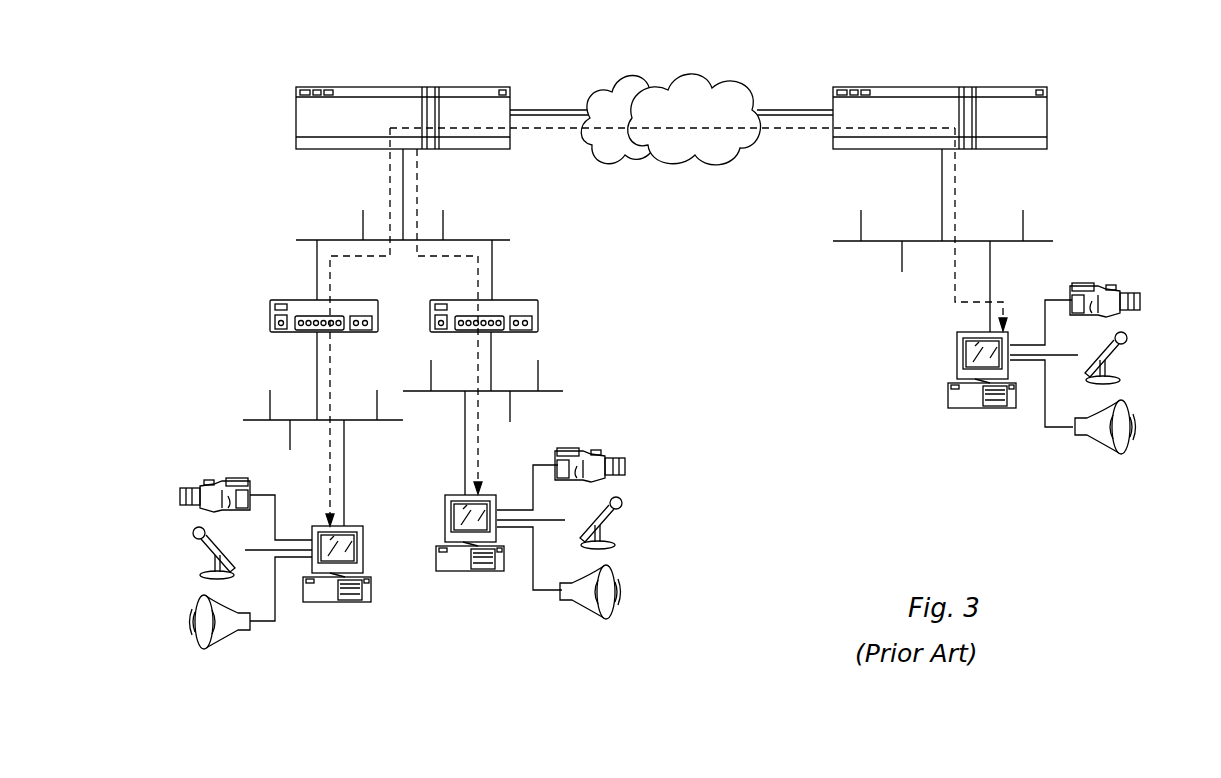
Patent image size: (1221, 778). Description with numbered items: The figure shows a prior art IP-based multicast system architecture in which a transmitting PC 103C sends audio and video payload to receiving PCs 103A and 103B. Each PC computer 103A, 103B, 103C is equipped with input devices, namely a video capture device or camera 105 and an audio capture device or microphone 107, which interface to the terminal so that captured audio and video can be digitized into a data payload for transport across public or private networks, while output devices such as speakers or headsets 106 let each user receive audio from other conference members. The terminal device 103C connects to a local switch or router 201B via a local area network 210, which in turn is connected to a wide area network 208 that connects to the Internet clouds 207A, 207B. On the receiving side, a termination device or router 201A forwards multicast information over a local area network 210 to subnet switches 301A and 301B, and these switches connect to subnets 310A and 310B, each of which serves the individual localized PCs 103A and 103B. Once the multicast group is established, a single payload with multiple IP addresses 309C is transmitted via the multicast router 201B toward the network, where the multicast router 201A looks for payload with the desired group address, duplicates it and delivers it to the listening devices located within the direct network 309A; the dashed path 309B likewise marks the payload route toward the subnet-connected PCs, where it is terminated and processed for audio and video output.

The termination device or router 201A is at (395, 87).
The local switch or router 201B is at (928, 88).
The Internet cloud 207A is at (630, 73).
The Internet cloud 207B is at (704, 71).
The wide area network 208 is at (544, 110).
The local area network 210 is at (310, 240).
The subnet switch 301A is at (304, 300).
The subnet switch 301B is at (506, 300).
The subnet 310A is at (258, 420).
The subnet 310B is at (561, 391).
The direct network 309A is at (328, 478).
The data path 309B is at (548, 130).
The single payload with multiple IP addresses 309C is at (799, 130).
The PC computer 103A is at (363, 549).
The PC computer 103B is at (445, 511).
The PC computer 103C is at (957, 354).
The video capture device 105 is at (180, 492).
The speakers or headsets 106 is at (196, 608).
The audio capture device 107 is at (206, 551).